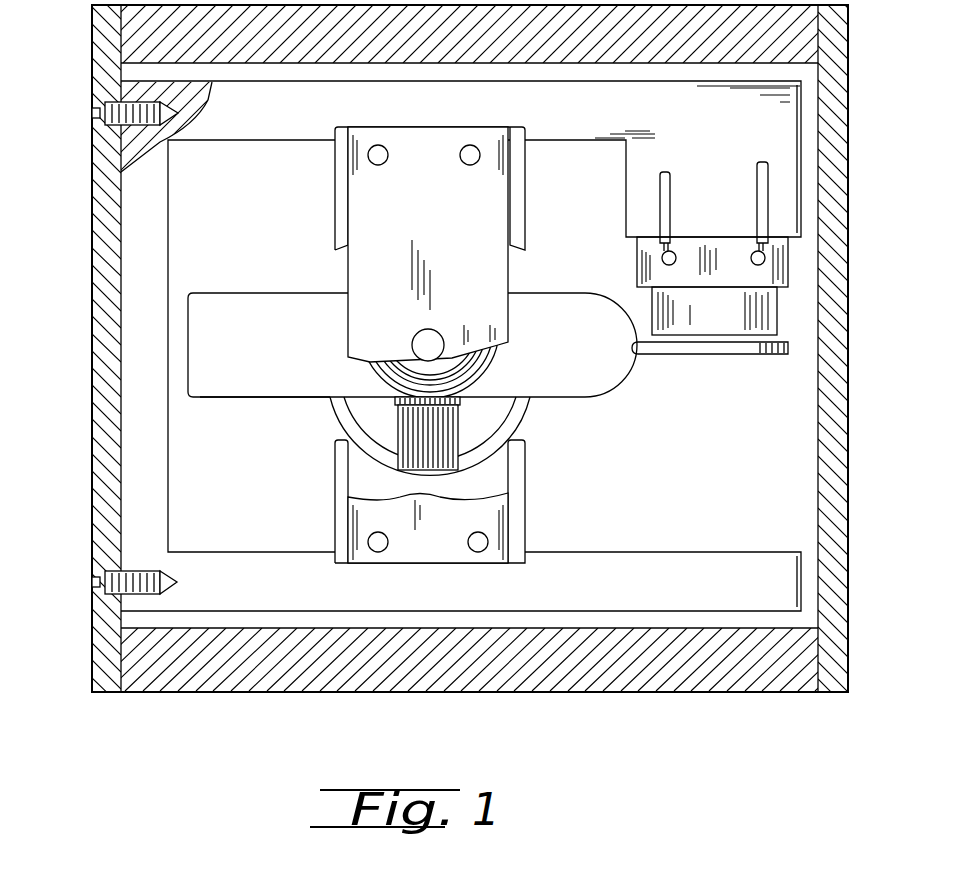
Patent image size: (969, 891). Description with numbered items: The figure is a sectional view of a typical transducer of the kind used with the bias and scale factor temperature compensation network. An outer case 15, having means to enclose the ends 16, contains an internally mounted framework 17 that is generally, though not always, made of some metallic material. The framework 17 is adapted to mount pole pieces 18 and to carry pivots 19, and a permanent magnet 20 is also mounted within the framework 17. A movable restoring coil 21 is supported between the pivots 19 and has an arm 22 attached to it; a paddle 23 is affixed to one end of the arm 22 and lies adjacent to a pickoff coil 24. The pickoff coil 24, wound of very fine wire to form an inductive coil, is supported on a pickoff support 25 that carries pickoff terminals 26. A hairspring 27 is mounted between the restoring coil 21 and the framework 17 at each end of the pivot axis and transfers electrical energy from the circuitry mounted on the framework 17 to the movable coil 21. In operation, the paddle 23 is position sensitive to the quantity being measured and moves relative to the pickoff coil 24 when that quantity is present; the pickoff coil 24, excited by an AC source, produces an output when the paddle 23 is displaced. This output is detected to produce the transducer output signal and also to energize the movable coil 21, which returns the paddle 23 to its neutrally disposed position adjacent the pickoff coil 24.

The outer case 15 is at (660, 692).
The ends 16 is at (97, 68).
The framework 17 is at (148, 505).
The pole pieces 18 is at (340, 152).
The pivots 19 is at (420, 333).
The permanent magnet 20 is at (525, 402).
The movable restoring coil 21 is at (490, 448).
The arm 22 is at (283, 385).
The paddle 23 is at (788, 348).
The pickoff coil 24 is at (777, 336).
The pickoff support 25 is at (790, 284).
The pickoff terminals 26 is at (765, 256).
The hairspring 27 is at (500, 372).